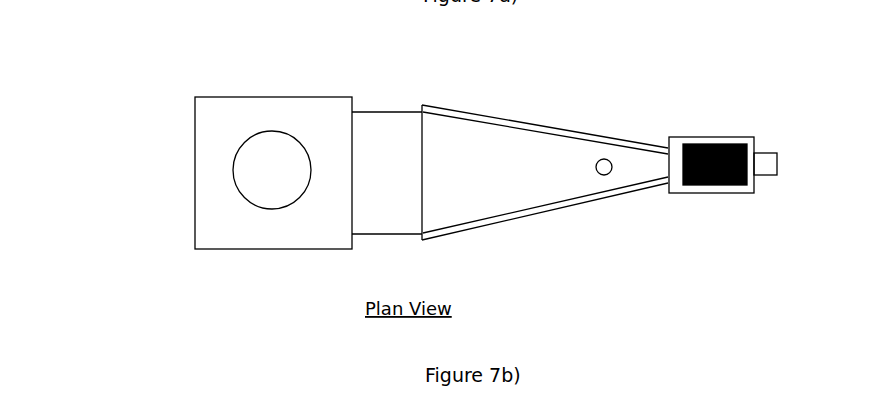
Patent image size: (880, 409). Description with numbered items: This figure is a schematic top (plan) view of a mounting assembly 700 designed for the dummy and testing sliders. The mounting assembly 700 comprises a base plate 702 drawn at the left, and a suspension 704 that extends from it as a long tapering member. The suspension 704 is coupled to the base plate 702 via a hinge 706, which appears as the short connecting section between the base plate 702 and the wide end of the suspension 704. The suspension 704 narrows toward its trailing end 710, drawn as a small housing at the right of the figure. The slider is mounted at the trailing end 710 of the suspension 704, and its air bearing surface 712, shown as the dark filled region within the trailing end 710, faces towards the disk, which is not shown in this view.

The mounting assembly 700 is at (139, 63).
The base plate 702 is at (237, 96).
The suspension 704 is at (533, 123).
The hinge 706 is at (385, 105).
The trailing end 710 is at (672, 120).
The air bearing surface 712 is at (717, 142).